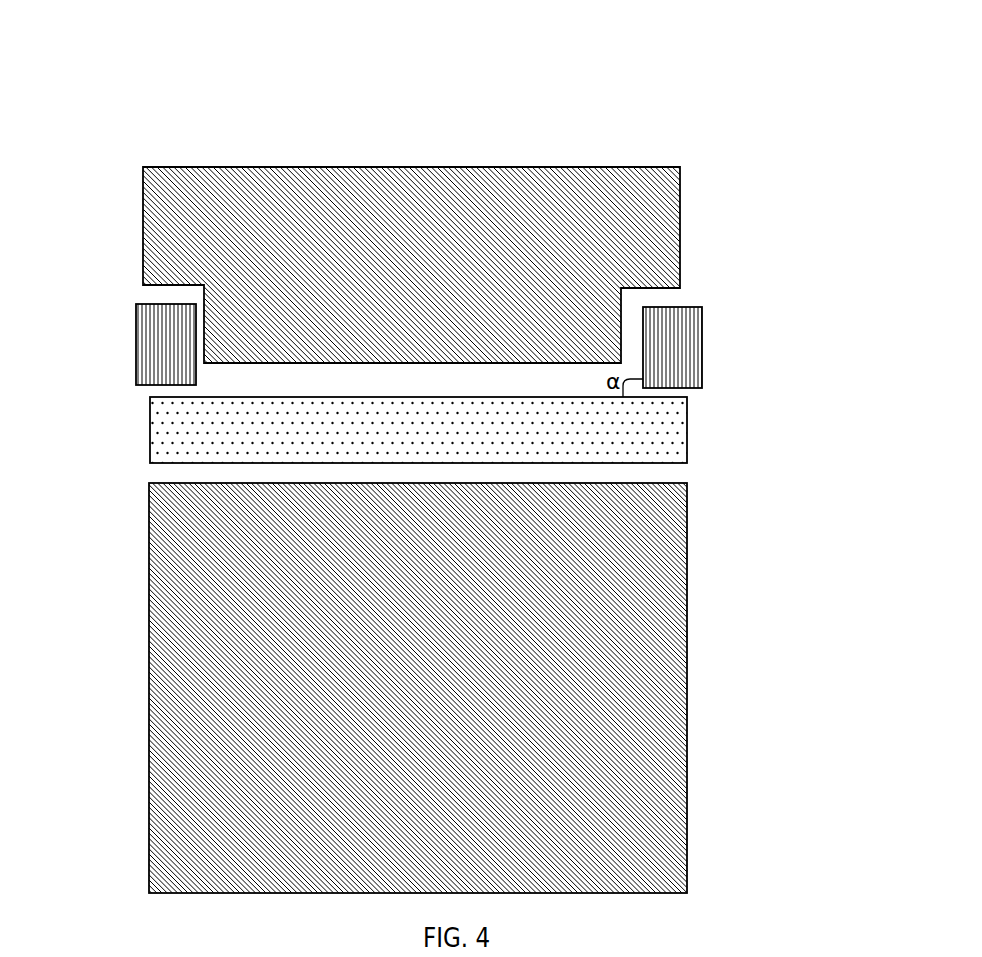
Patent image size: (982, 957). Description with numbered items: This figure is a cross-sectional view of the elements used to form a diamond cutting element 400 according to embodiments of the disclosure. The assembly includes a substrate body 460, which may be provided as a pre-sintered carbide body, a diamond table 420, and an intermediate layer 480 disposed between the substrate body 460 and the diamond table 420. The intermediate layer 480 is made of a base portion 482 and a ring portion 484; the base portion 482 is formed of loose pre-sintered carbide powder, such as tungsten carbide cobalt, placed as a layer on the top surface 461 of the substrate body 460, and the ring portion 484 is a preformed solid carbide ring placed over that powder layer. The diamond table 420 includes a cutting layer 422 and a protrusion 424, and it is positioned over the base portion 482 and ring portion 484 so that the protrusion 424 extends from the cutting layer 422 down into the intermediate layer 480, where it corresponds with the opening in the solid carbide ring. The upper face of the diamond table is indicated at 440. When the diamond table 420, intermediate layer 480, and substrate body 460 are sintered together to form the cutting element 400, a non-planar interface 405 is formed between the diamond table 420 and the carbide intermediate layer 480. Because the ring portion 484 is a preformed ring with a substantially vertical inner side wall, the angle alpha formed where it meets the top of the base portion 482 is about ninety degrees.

The cutting element 400 is at (157, 94).
The top surface of upper mold 440 is at (658, 162).
The diamond table 420 is at (628, 246).
The cutting layer 422 is at (136, 170).
The protrusion 424 is at (207, 285).
The non-planar interface 405 is at (684, 298).
The ring portion 484 is at (419, 346).
The intermediate layer 480 is at (120, 312).
The base portion 482 is at (418, 430).
The top surface 461 is at (670, 482).
The substrate body 460 is at (312, 716).